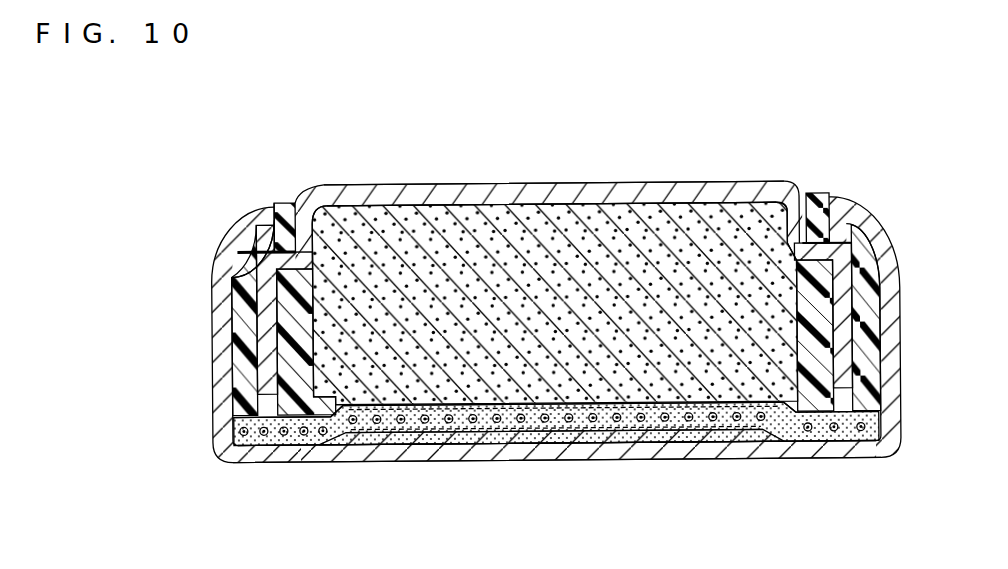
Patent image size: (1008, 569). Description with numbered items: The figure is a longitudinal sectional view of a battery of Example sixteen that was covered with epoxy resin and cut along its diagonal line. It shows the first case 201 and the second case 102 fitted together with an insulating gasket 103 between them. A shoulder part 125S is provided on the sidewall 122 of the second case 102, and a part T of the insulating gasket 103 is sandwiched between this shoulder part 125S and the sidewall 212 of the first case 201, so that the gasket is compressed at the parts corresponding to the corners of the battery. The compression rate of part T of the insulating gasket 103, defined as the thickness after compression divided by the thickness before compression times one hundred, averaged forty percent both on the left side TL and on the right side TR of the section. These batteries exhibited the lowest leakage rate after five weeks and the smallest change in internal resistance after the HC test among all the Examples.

The second case 102 is at (384, 203).
The insulating gasket 103 is at (291, 201).
The left side TL is at (245, 233).
The right side TR is at (850, 220).
The shoulder part 125S is at (233, 277).
The sidewall of the second case 122 is at (232, 333).
The sidewall of the first case 212 is at (212, 400).
The first case 201 is at (268, 453).